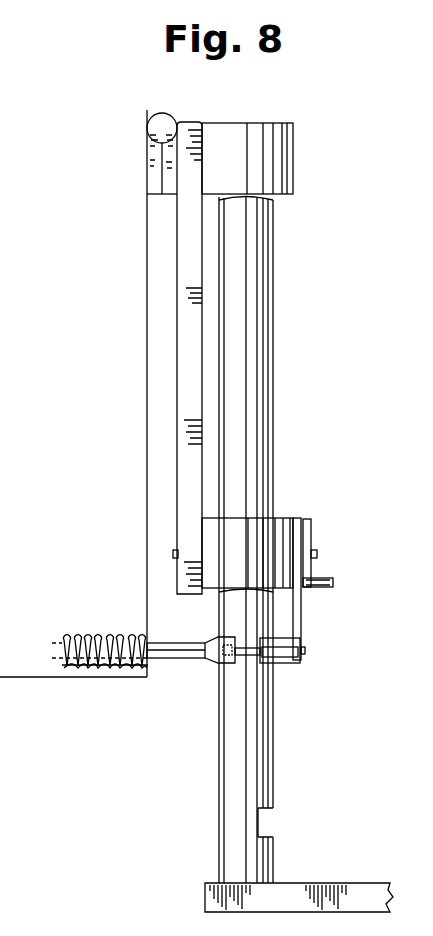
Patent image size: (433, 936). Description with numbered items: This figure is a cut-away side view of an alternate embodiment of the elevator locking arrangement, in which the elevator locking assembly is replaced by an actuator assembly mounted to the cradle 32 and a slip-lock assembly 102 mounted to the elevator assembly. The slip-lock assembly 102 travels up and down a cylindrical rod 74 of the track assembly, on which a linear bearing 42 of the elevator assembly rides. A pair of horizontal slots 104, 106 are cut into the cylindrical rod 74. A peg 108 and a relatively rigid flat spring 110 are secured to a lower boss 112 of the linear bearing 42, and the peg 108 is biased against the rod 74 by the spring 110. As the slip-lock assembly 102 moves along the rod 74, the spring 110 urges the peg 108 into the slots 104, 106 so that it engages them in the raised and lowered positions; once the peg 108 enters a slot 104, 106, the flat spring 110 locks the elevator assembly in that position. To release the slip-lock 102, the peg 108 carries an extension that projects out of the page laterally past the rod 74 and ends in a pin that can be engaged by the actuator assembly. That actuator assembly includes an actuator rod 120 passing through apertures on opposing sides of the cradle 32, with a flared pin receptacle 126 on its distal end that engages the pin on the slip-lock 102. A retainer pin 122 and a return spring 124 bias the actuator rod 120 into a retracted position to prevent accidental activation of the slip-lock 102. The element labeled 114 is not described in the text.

The cradle 32 is at (32, 685).
The linear bearing 42 is at (299, 316).
The cylindrical rod 74 is at (220, 750).
The slip-lock assembly 102 is at (355, 720).
The horizontal slot 104 is at (277, 821).
The horizontal slot 106 is at (278, 667).
The peg 108 is at (286, 664).
The flat spring 110 is at (302, 622).
The lower boss 112 is at (281, 518).
The bracket 114 is at (311, 540).
The actuator rod 120 is at (54, 642).
The retainer pin 122 is at (66, 665).
The return spring 124 is at (101, 634).
The flared pin receptacle 126 is at (209, 662).